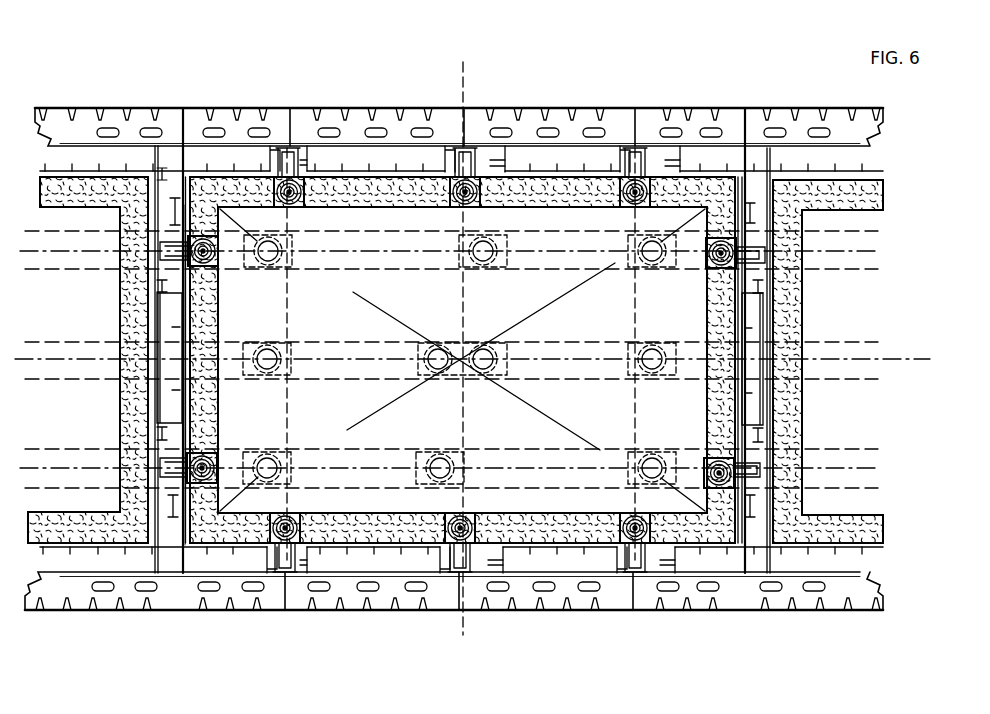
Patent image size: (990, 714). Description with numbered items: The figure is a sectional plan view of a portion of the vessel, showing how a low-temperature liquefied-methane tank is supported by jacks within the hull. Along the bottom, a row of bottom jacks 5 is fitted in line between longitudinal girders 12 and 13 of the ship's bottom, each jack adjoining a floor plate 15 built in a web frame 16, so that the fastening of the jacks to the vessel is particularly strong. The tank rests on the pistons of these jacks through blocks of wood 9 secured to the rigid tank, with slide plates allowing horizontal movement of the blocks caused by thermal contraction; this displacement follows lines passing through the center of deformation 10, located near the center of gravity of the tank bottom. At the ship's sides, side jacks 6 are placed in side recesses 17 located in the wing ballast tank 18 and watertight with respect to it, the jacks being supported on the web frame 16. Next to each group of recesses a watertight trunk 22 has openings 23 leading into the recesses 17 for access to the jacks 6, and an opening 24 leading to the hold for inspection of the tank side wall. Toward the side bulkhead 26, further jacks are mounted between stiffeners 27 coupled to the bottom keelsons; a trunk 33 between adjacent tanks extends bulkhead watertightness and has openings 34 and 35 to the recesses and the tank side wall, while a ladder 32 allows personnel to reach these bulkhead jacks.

The bottom jack 5 is at (275, 247).
The side jack 6 is at (285, 155).
The block of wood 9 is at (478, 187).
The center of deformation 10 is at (470, 367).
The longitudinal girder 12 is at (868, 237).
The longitudinal girder 13 is at (877, 273).
The floor plate 15 is at (287, 417).
The web frame 16 is at (463, 120).
The side recess 17 is at (447, 148).
The wing ballast tank 18 is at (330, 102).
The trunk 22 is at (495, 165).
The opening 23 is at (480, 158).
The opening 24 is at (487, 187).
The side bulkhead 26 is at (183, 132).
The stiffener 27 is at (173, 420).
The ladder 32 is at (173, 210).
The trunk 33 is at (175, 282).
The opening 34 is at (183, 283).
The opening 35 is at (173, 265).